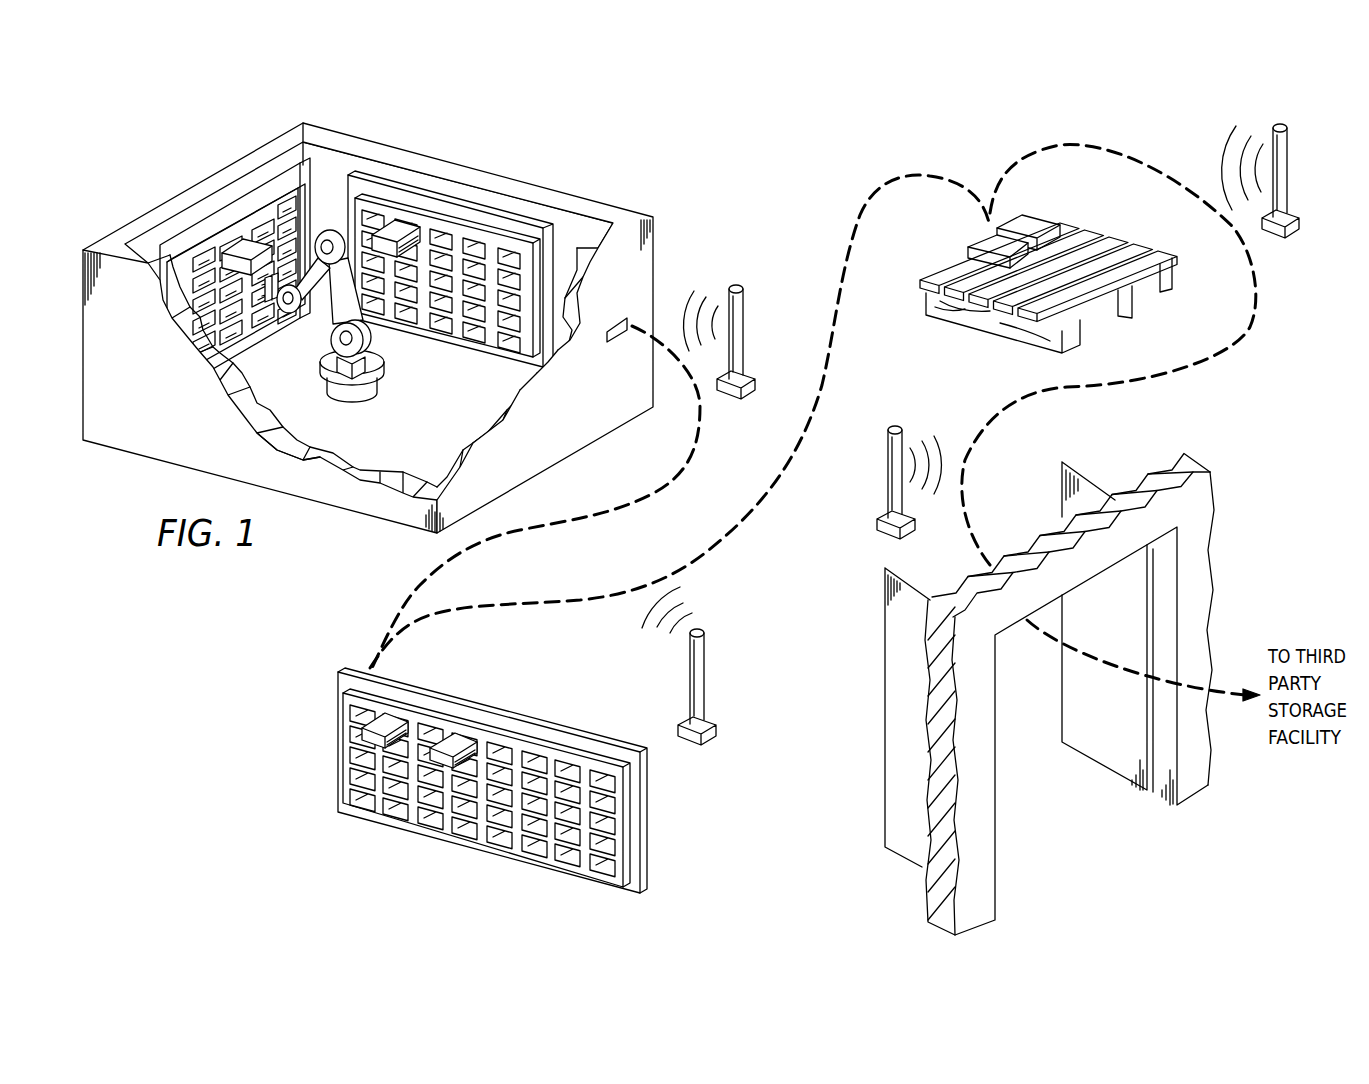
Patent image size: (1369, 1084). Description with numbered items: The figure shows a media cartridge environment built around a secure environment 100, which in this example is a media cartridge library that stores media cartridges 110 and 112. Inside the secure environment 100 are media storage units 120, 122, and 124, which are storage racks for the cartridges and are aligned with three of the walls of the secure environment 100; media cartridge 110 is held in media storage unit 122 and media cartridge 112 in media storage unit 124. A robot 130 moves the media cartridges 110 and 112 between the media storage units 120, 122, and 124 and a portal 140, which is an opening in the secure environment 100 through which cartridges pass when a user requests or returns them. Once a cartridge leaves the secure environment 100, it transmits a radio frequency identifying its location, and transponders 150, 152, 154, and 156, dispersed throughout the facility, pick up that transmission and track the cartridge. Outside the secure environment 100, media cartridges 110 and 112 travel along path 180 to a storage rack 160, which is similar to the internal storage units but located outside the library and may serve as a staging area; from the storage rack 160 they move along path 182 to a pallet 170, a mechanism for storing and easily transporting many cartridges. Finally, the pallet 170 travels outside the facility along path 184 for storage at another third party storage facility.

The secure environment 100 is at (368, 323).
The media cartridge 110 is at (240, 243).
The media cartridge 112 is at (400, 227).
The media storage unit 120 is at (303, 427).
The media storage unit 122 is at (270, 187).
The media storage unit 124 is at (490, 213).
The robot 130 is at (388, 374).
The portal 140 is at (609, 337).
The transponder 150 is at (746, 336).
The transponder 152 is at (708, 677).
The transponder 154 is at (887, 480).
The transponder 156 is at (1290, 173).
The storage rack 160 is at (338, 745).
The pallet 170 is at (1174, 272).
The path 180 is at (610, 508).
The path 182 is at (829, 355).
The path 184 is at (1251, 317).